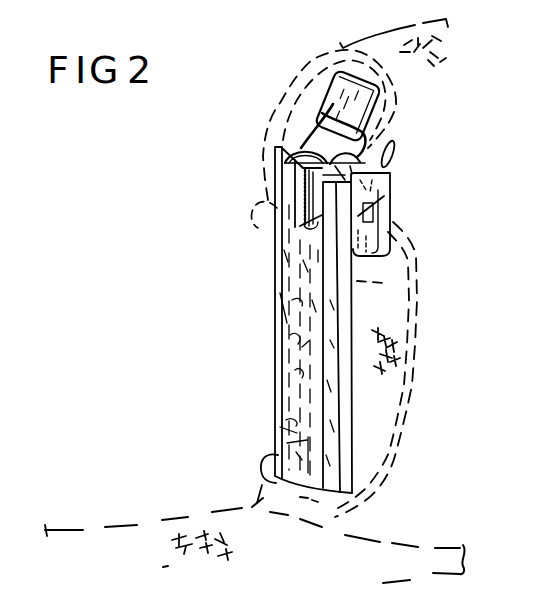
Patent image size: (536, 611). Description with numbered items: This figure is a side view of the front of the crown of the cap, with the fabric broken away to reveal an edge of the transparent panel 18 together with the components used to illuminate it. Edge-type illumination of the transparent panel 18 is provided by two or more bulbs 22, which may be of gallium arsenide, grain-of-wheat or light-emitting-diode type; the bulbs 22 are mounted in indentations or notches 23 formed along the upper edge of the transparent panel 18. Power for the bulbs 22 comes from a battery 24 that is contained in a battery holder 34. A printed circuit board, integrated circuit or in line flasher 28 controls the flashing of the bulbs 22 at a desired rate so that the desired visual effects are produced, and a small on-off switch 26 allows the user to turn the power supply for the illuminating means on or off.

The transparent panel 18 is at (284, 165).
The bulbs 22 is at (300, 226).
The notches 23 is at (302, 198).
The battery 24 is at (366, 108).
The on-off switch 26 is at (395, 152).
The in line flasher 28 is at (384, 196).
The battery holder 34 is at (327, 89).